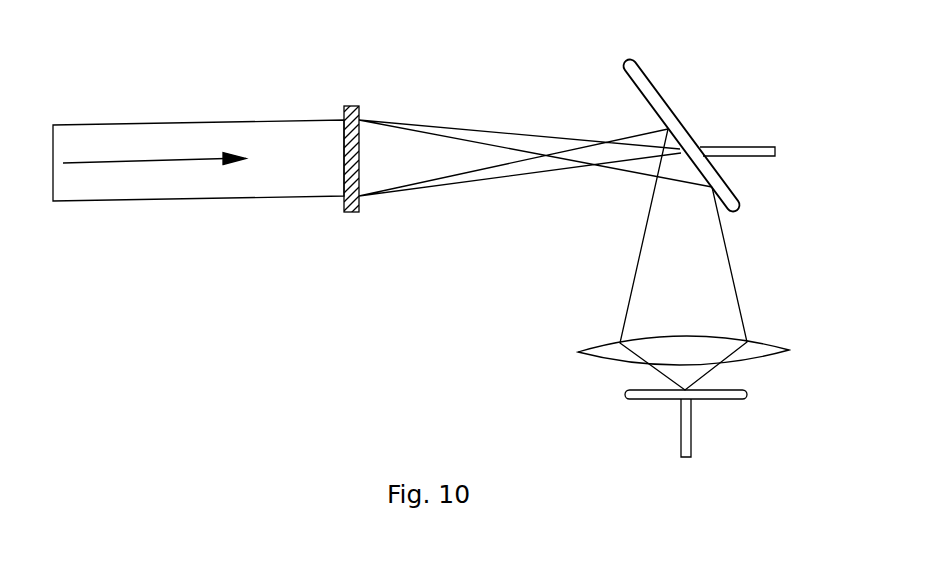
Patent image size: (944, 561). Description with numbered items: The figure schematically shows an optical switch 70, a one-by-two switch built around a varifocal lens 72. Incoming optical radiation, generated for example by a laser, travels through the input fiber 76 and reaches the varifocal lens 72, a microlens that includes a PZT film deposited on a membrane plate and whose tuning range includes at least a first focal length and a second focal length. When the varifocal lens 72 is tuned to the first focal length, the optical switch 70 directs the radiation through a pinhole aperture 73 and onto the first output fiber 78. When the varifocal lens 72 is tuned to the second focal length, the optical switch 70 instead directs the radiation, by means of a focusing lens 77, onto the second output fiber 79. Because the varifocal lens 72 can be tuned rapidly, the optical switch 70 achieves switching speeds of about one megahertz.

The optical switch 70 is at (332, 304).
The input fiber 76 is at (128, 130).
The varifocal lens 72 is at (348, 105).
The pinhole aperture 73 is at (702, 127).
The first output fiber 78 is at (772, 157).
The focusing lens 77 is at (758, 343).
The second output fiber 79 is at (692, 432).